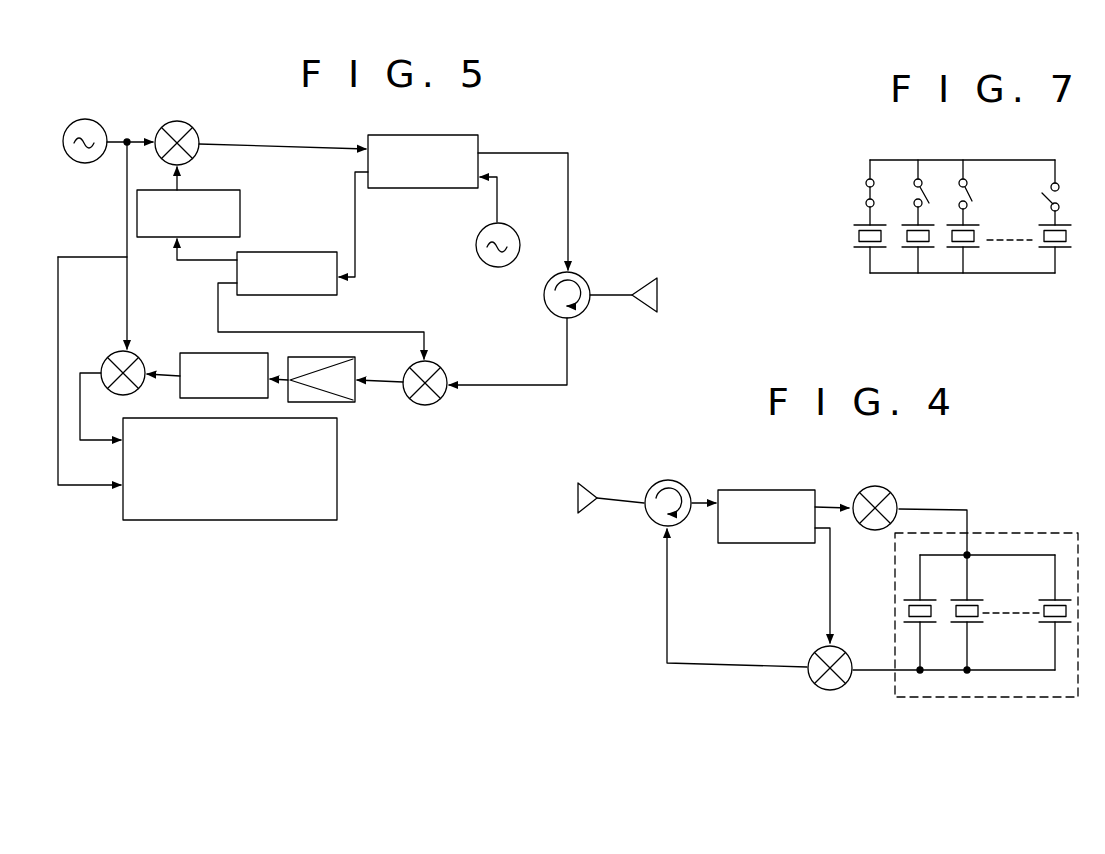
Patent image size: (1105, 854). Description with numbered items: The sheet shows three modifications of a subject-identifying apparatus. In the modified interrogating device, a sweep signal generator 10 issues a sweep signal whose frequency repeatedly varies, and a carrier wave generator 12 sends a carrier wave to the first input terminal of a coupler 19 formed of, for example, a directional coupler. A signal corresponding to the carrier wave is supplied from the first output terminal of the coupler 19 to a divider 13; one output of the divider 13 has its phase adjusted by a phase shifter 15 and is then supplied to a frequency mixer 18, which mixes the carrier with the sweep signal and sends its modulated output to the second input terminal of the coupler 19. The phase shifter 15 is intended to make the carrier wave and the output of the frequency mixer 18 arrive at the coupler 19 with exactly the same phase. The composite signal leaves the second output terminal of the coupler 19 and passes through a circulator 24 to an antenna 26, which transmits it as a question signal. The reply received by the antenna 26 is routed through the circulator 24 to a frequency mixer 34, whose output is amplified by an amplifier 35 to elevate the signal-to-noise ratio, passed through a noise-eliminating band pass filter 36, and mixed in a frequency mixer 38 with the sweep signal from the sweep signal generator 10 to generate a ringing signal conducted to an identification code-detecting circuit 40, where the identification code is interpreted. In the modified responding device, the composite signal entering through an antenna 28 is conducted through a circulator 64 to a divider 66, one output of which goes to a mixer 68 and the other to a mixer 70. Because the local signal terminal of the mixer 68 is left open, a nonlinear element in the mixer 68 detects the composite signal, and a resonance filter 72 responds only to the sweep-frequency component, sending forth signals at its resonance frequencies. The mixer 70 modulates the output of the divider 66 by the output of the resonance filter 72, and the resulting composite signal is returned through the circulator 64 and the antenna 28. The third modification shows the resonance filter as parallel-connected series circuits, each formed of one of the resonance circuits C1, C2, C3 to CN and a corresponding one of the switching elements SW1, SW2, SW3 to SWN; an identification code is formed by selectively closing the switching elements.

In FIG. 5, the sweep signal generator 10 is at (78, 121).
In FIG. 5, the frequency mixer 18 is at (184, 122).
In FIG. 5, the coupler 19 is at (460, 135).
In FIG. 5, the carrier wave generator 12 is at (475, 242).
In FIG. 5, the phase shifter 15 is at (240, 213).
In FIG. 5, the divider 13 is at (337, 290).
In FIG. 5, the circulator 24 is at (584, 312).
In FIG. 5, the antenna 26 is at (659, 310).
In FIG. 5, the frequency mixer 38 is at (106, 352).
In FIG. 5, the band pass filter 36 is at (192, 352).
In FIG. 5, the amplifier 35 is at (355, 400).
In FIG. 5, the frequency mixer 34 is at (440, 400).
In FIG. 5, the identification code-detecting circuit 40 is at (337, 472).
In FIG. 4, the antenna 28 is at (588, 486).
In FIG. 4, the circulator 64 is at (678, 482).
In FIG. 4, the divider 66 is at (758, 490).
In FIG. 4, the mixer 68 is at (866, 485).
In FIG. 4, the mixer 70 is at (818, 644).
In FIG. 4, the resonance filter 72 is at (996, 533).
In FIG. 7, the switching element SW1 is at (866, 192).
In FIG. 7, the switching element SW2 is at (914, 180).
In FIG. 7, the switching element SW3 is at (971, 190).
In FIG. 7, the switching element SWN is at (1042, 202).
In FIG. 7, the resonance circuit C1 is at (852, 250).
In FIG. 7, the resonance circuit C2 is at (909, 252).
In FIG. 7, the resonance circuit C3 is at (959, 252).
In FIG. 7, the resonance circuit CN is at (1038, 254).